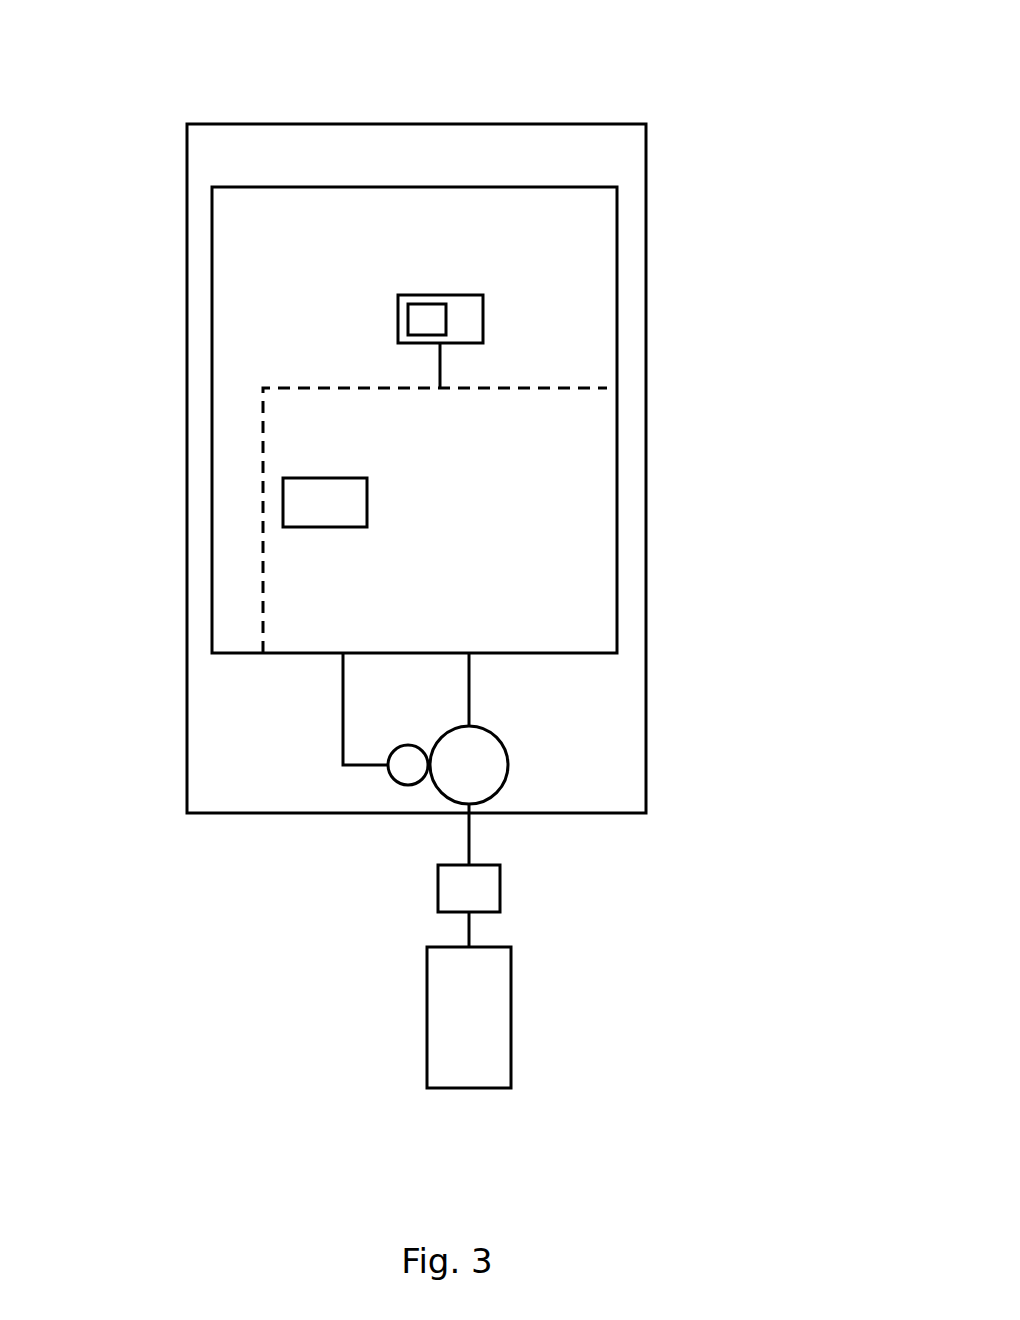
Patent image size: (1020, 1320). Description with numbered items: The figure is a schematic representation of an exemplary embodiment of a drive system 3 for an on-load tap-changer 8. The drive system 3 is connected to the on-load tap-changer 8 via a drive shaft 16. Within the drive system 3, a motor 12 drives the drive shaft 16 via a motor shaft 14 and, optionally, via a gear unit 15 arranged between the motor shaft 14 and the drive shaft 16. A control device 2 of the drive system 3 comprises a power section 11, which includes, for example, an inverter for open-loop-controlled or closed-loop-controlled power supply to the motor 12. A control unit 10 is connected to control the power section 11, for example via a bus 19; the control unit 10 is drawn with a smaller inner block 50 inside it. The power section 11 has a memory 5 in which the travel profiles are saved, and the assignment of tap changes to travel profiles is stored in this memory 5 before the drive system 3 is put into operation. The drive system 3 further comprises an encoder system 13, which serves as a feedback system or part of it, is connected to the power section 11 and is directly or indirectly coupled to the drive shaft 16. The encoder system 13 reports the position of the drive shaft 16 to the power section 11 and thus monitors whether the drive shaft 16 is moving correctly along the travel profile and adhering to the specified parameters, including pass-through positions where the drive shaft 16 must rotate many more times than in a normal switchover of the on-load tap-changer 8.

The control device 2 is at (330, 248).
The drive system 3 is at (526, 121).
The memory 5 is at (303, 508).
The on-load tap-changer 8 is at (483, 1043).
The control unit 10 is at (465, 325).
The power section 11 is at (505, 475).
The motor 12 is at (473, 763).
The encoder system 13 is at (403, 770).
The motor shaft 14 is at (467, 838).
The gear unit 15 is at (460, 892).
The drive shaft 16 is at (472, 927).
The bus 19 is at (445, 363).
The processor 50 is at (427, 322).